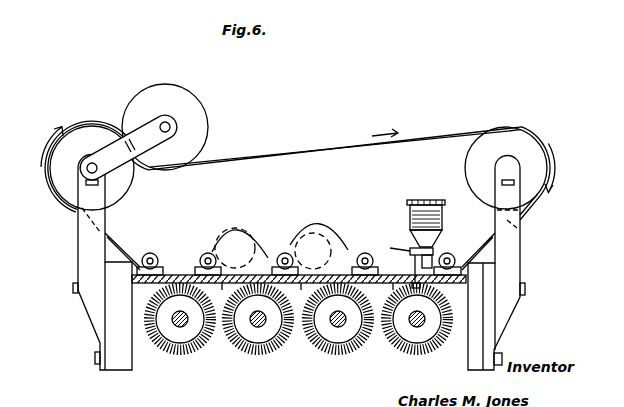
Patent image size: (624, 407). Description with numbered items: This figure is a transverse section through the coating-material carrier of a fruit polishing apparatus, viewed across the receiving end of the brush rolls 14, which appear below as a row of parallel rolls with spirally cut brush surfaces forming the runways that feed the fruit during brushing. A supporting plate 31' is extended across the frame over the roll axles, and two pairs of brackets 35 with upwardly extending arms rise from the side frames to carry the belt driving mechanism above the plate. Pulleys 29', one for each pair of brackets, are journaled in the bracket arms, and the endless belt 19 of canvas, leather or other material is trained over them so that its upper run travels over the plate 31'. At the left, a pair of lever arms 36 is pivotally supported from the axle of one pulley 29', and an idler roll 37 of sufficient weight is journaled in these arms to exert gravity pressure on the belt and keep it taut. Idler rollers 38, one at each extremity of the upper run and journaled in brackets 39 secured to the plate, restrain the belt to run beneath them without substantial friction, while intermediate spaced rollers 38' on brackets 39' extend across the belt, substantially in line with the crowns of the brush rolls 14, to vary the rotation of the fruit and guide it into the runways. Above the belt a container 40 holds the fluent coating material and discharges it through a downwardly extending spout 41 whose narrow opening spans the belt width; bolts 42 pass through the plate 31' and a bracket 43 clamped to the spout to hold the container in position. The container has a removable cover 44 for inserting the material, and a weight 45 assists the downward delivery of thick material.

The brush rolls 14 is at (184, 353).
The endless belt 19 is at (303, 150).
The pulleys 29' is at (293, 168).
The supporting plate 31' is at (219, 326).
The brackets 35 is at (98, 315).
The lever arms 36 is at (110, 147).
The idler roll 37 is at (192, 102).
The idler rollers 38 is at (343, 243).
The spaced rollers 38' is at (359, 245).
The brackets 39 is at (189, 258).
The brackets 39' is at (295, 324).
The container 40 is at (410, 213).
The spout 41 is at (440, 262).
The bolts 42 is at (393, 290).
The bracket 43 is at (410, 250).
The removable cover 44 is at (426, 200).
The weight 45 is at (442, 214).